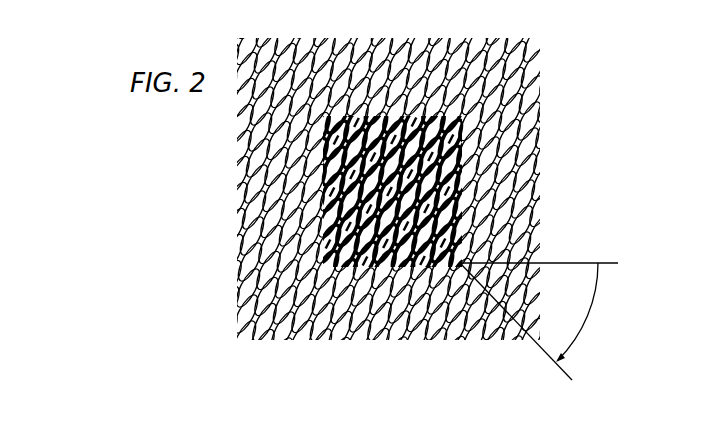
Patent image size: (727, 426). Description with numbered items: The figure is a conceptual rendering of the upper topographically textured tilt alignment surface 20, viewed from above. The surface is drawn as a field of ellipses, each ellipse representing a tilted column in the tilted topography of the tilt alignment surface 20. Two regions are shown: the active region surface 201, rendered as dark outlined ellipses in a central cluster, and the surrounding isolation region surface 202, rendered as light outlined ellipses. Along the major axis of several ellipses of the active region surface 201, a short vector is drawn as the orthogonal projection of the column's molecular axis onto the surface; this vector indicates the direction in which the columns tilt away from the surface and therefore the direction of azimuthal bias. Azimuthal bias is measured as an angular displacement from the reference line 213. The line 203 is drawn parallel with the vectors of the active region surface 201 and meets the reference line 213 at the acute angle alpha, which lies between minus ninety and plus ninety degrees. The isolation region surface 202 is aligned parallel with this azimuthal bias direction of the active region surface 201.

The upper tilt alignment surface 20 is at (363, 213).
The active region surface 201 is at (330, 190).
The isolation region surface 202 is at (245, 262).
The reference line 213 is at (618, 263).
The line indicating direction of azimuthal bias 203 is at (565, 370).